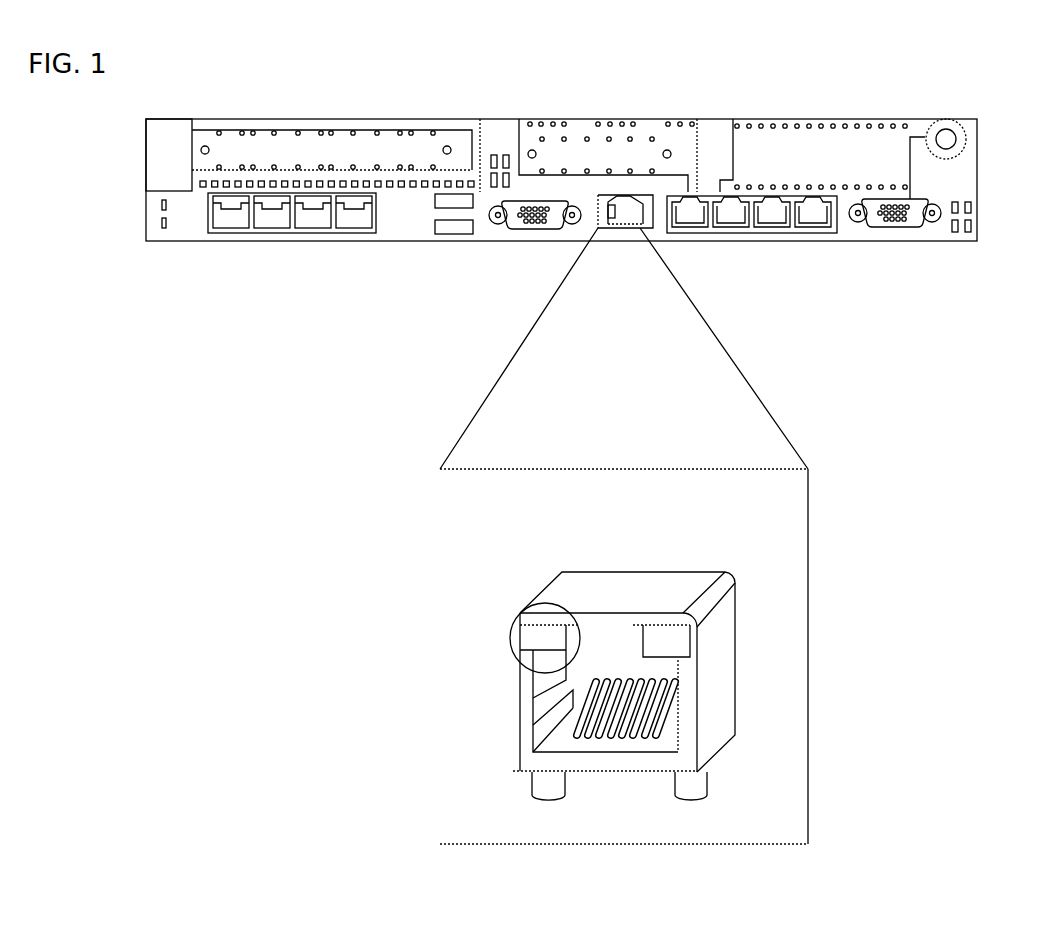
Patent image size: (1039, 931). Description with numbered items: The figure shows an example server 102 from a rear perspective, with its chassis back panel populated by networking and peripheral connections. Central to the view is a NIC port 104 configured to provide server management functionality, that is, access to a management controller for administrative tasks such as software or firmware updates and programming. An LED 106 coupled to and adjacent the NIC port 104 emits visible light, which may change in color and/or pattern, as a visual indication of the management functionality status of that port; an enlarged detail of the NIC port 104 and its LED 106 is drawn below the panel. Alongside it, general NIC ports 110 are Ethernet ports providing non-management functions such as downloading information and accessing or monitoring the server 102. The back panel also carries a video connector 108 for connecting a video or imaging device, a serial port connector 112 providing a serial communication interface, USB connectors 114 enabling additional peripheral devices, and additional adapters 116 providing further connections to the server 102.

The server 102 is at (150, 112).
The NIC port 104 is at (632, 226).
The LED 106 is at (612, 224).
The video connector 108 is at (893, 228).
The general NIC ports 110 is at (835, 247).
The serial port connector 112 is at (535, 229).
The USB connectors 114 is at (453, 241).
The additional adapters 116 is at (375, 247).